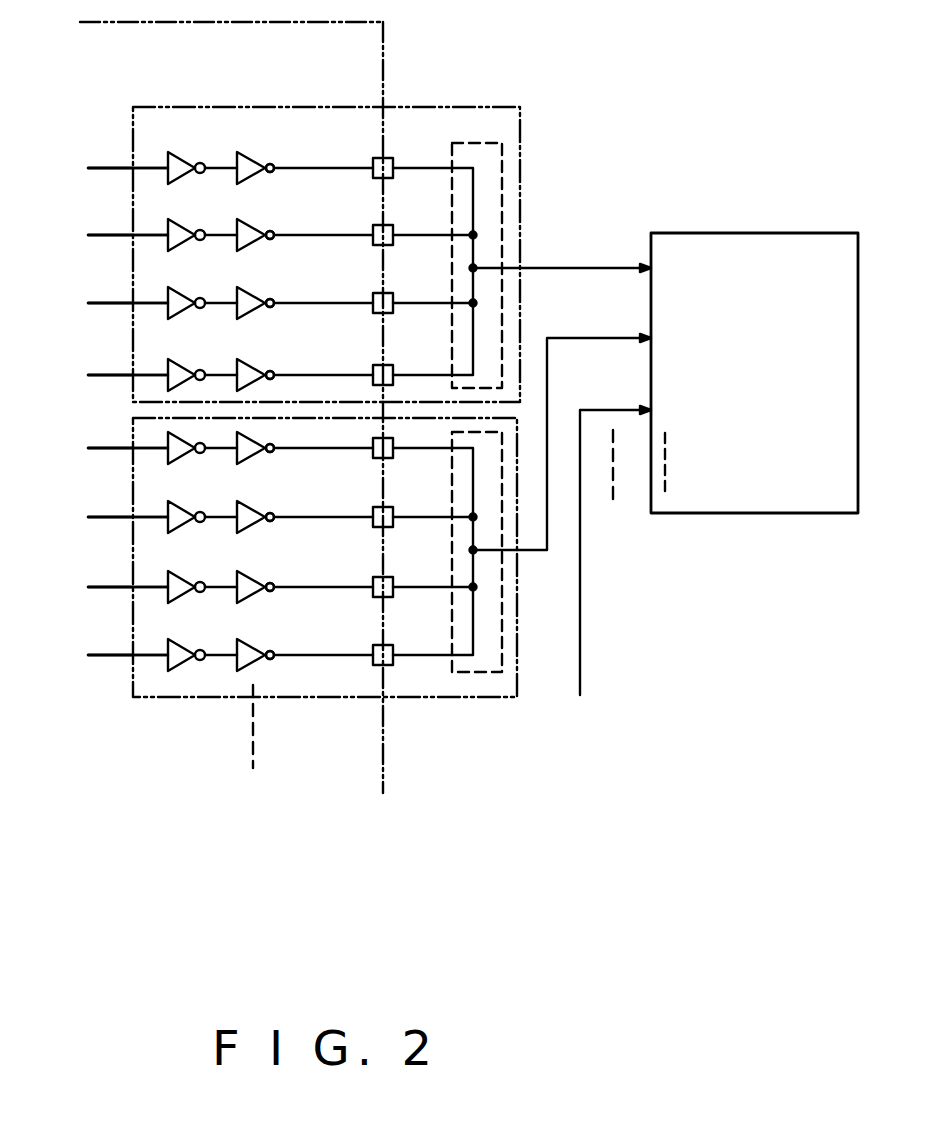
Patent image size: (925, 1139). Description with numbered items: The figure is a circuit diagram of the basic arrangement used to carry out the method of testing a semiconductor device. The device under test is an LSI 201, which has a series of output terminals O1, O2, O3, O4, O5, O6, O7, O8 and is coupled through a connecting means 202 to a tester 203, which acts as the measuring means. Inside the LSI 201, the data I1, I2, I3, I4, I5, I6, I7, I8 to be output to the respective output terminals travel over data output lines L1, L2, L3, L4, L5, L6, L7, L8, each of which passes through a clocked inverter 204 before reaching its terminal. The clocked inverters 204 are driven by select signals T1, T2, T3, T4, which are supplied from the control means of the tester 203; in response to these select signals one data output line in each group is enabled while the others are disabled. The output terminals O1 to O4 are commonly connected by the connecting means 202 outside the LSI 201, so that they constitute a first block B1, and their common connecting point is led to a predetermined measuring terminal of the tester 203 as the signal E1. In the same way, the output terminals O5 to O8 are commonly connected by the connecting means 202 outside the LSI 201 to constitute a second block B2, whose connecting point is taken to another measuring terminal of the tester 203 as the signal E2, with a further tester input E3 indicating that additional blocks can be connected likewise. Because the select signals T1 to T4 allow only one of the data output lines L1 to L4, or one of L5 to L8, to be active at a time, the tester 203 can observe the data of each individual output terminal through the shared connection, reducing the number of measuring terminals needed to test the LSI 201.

The LSI 201 is at (387, 72).
The connecting means 202 is at (503, 168).
The tester 203 is at (783, 242).
The clocked inverter 204 is at (237, 158).
The first block B1 is at (154, 107).
The second block B2 is at (172, 698).
The select signal T1 is at (271, 164).
The select signal T2 is at (272, 231).
The select signal T3 is at (272, 299).
The select signal T4 is at (272, 371).
The output terminal O1 is at (393, 160).
The output terminal O2 is at (393, 228).
The output terminal O3 is at (393, 296).
The output terminal O4 is at (393, 368).
The output terminal O5 is at (400, 432).
The output terminal O6 is at (393, 510).
The output terminal O7 is at (393, 580).
The output terminal O8 is at (393, 648).
The data output to output terminal I1 is at (87, 168).
The data output to output terminal I2 is at (87, 235).
The data output to output terminal I3 is at (87, 303).
The data output to output terminal I4 is at (87, 375).
The data output to output terminal I5 is at (87, 448).
The data output to output terminal I6 is at (87, 517).
The data output to output terminal I7 is at (87, 587).
The data output to output terminal I8 is at (87, 655).
The data output line L1 is at (106, 168).
The data output line L2 is at (116, 235).
The data output line L3 is at (116, 303).
The data output line L4 is at (116, 375).
The data output line L5 is at (103, 448).
The data output line L6 is at (114, 517).
The data output line L7 is at (112, 587).
The data output line L8 is at (108, 655).
The signal supplied to the tester E1 is at (580, 269).
The signal supplied to the tester E2 is at (581, 436).
The signal supplied to the tester E3 is at (634, 545).